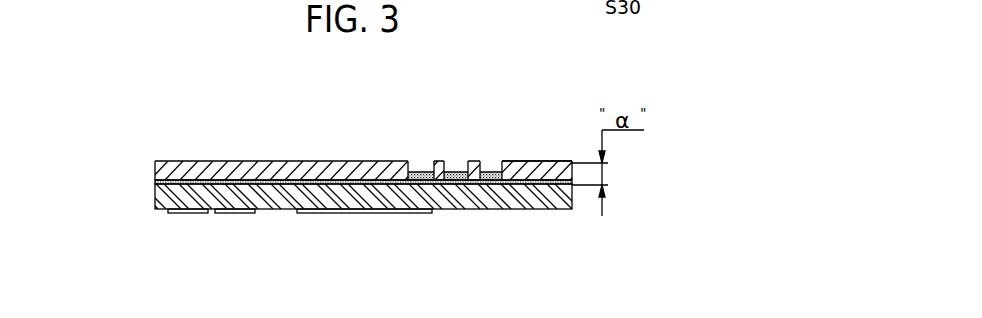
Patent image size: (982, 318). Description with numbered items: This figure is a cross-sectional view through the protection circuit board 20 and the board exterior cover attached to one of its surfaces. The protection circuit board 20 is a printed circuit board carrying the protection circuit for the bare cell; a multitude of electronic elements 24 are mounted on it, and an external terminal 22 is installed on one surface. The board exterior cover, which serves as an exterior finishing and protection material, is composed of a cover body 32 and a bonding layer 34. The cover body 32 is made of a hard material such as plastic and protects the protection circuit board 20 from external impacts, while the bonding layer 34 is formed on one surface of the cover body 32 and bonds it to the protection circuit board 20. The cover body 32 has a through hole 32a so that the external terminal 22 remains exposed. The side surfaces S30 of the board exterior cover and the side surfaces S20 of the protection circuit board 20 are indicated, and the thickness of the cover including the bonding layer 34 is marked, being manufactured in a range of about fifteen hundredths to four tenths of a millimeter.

The protection circuit board 20 is at (265, 209).
The external terminal 22 is at (455, 185).
The electronic elements 24 is at (355, 213).
The cover body 32 is at (330, 163).
The through hole 32a is at (421, 163).
The bonding layer 34 is at (540, 165).
The side surfaces of board exterior cover S30 is at (155, 168).
The side surfaces of protection circuit board S20 is at (155, 193).